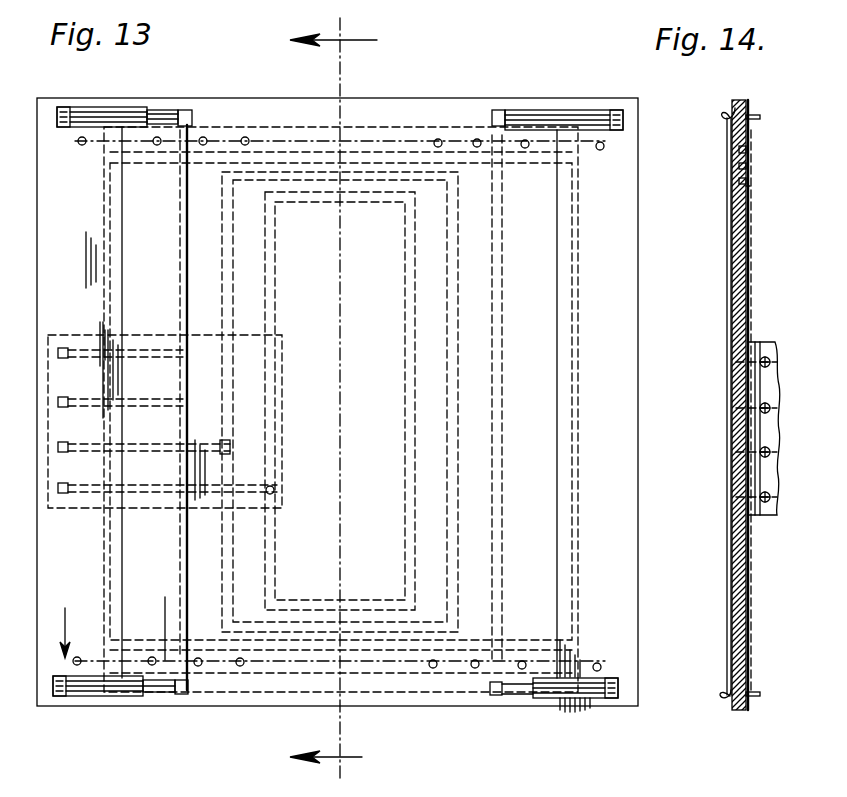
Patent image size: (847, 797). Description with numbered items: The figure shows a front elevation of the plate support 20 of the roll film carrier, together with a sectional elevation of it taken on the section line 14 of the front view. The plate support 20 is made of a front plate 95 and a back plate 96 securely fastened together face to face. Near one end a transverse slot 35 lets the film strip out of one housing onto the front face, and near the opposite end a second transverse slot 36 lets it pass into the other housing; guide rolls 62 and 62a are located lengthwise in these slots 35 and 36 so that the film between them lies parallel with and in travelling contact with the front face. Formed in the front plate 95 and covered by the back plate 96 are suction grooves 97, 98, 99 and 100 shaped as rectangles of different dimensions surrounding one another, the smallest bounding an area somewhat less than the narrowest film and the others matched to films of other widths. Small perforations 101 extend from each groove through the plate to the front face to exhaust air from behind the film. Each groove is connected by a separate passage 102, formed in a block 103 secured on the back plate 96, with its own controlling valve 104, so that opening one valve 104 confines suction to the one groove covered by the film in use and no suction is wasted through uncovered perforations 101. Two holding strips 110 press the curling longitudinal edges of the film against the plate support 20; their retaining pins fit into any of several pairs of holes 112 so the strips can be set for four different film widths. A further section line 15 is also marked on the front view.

In FIG. 13, the section line 14— 14 is at (334, 401).
In FIG. 13, the section line 15- 15 is at (104, 619).
In FIG. 13, the plate support 20 is at (612, 245).
In FIG. 14, the plate support 20 is at (728, 305).
In FIG. 13, the transverse slot 35 is at (585, 116).
In FIG. 14, the transverse slot 35 is at (728, 118).
In FIG. 13, the second transverse slot 36 is at (585, 700).
In FIG. 14, the second transverse slot 36 is at (748, 687).
In FIG. 13, the guide roll 62 is at (118, 118).
In FIG. 14, the guide roll 62 is at (750, 122).
In FIG. 13, the guide roll 62a is at (104, 695).
In FIG. 14, the guide roll 62a is at (727, 697).
In FIG. 13, the front plate 95 is at (604, 375).
In FIG. 14, the front plate 95 is at (746, 232).
In FIG. 14, the back plate 96 is at (749, 265).
In FIG. 13, the suction groove 97 is at (272, 541).
In FIG. 14, the suction groove 97 is at (749, 190).
In FIG. 13, the suction groove 98 is at (228, 532).
In FIG. 14, the suction groove 98 is at (733, 182).
In FIG. 13, the suction groove 99 is at (183, 532).
In FIG. 14, the suction groove 99 is at (730, 165).
In FIG. 13, the suction groove 100 is at (110, 532).
In FIG. 14, the suction groove 100 is at (748, 152).
In FIG. 13, the suction perforations 101 is at (572, 175).
In FIG. 13, the connecting passage 102 is at (86, 344).
In FIG. 13, the block 103 is at (283, 352).
In FIG. 14, the block 103 is at (750, 345).
In FIG. 14, the controlling valve 104 is at (745, 392).
In FIG. 13, the holding strip 110 is at (125, 226).
In FIG. 14, the holding strip 110 is at (727, 572).
In FIG. 13, the holes 112 is at (246, 138).